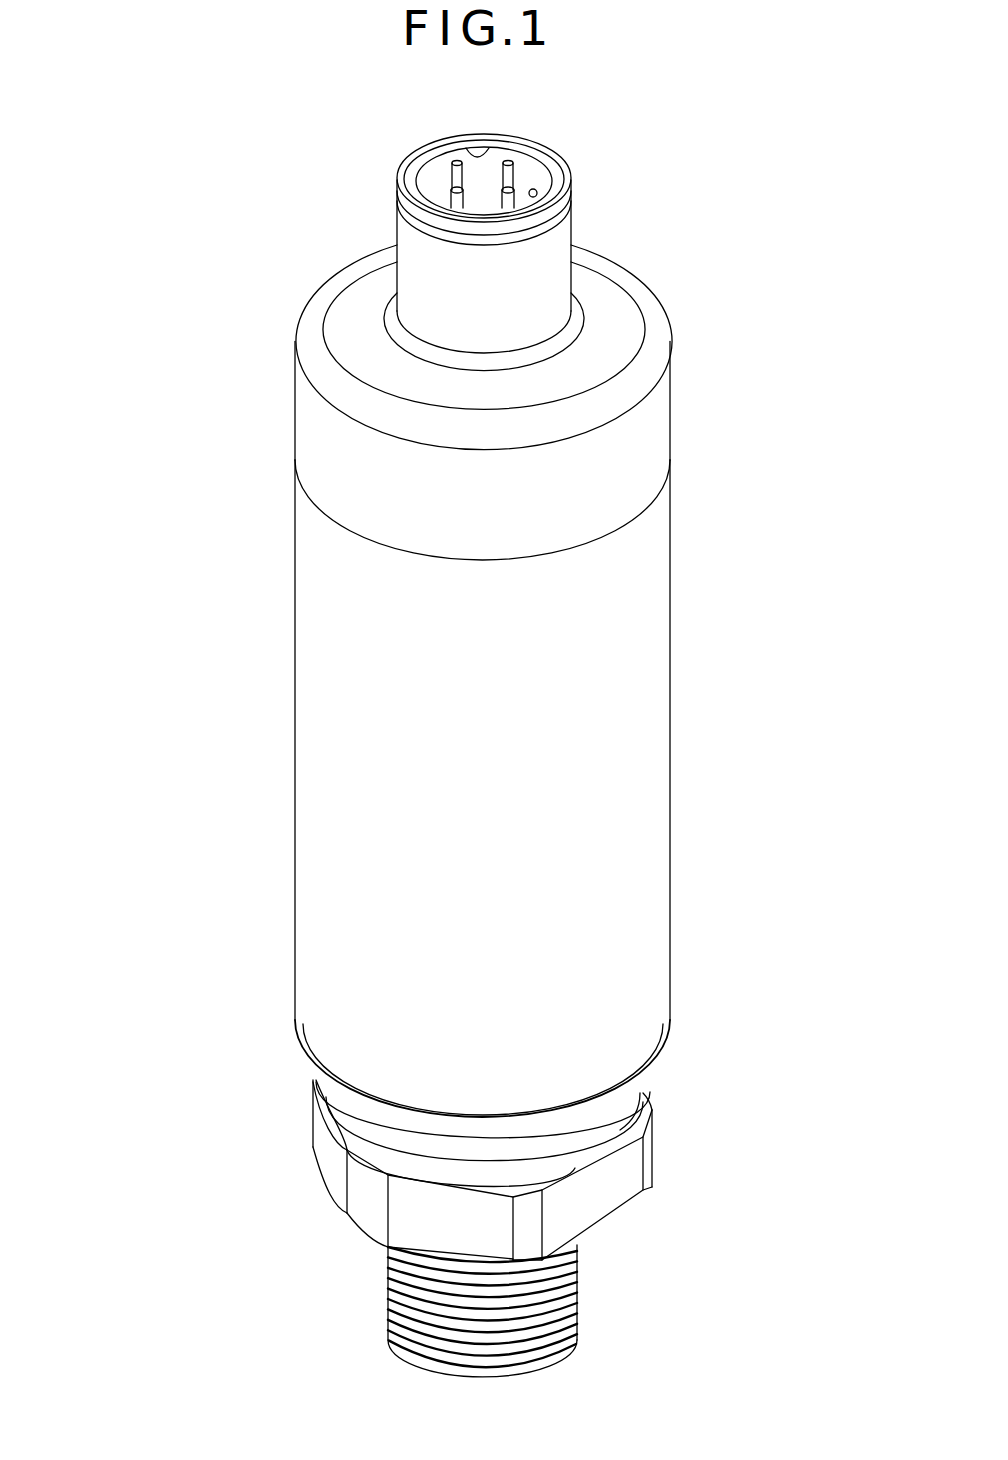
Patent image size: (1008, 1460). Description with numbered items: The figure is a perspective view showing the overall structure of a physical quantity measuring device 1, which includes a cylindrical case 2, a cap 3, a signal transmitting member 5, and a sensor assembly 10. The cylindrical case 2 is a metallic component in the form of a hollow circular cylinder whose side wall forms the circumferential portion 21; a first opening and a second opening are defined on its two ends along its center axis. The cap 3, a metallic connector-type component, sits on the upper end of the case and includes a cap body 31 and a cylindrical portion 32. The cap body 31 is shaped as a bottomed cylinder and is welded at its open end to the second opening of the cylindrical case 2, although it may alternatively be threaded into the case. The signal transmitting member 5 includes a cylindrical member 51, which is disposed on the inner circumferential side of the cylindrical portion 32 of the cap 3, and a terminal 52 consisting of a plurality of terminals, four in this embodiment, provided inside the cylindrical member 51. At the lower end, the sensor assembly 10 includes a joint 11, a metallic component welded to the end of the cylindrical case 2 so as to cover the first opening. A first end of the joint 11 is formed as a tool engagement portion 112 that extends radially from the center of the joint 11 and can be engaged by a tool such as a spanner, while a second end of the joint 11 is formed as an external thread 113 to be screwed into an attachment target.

The physical quantity measuring device 1 is at (826, 186).
The cylindrical case 2 is at (744, 613).
The circumferential portion 21 is at (317, 582).
The cap 3 is at (737, 325).
The cap body 31 is at (672, 405).
The cylindrical portion 32 is at (571, 221).
The signal transmitting member 5 is at (510, 130).
The cylindrical member 51 is at (488, 150).
The terminal 52 is at (513, 172).
The sensor assembly 10 is at (190, 1130).
The joint 11 is at (708, 1138).
The tool engagement portion 112 is at (313, 1115).
The external thread 113 is at (388, 1298).